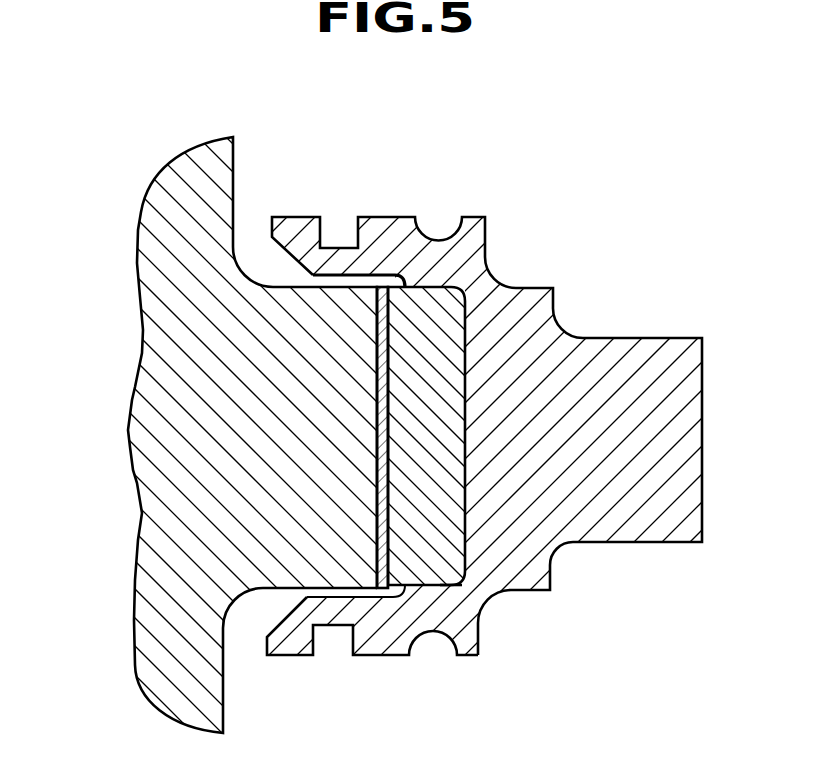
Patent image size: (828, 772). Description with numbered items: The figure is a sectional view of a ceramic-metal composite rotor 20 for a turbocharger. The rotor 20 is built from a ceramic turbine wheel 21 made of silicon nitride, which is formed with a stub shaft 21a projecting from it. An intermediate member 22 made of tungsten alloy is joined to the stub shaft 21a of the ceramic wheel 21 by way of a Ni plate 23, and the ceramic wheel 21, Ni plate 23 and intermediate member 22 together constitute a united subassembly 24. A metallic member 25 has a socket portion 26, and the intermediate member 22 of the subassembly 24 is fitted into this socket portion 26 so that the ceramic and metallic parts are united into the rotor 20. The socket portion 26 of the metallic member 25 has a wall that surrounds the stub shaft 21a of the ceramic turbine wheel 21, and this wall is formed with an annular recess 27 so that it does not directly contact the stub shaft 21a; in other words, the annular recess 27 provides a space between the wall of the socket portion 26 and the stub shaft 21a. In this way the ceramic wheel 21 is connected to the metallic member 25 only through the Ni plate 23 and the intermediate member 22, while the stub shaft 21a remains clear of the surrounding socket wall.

The ceramic-metal composite rotor 20 is at (521, 170).
The ceramic turbine wheel 21 is at (148, 240).
The stub shaft 21a is at (272, 578).
The intermediate member 22 is at (430, 300).
The Ni plate 23 is at (383, 288).
The united subassembly 24 is at (303, 186).
The metallic member 25 is at (648, 348).
The socket portion 26 is at (442, 587).
The annular recess 27 is at (343, 595).